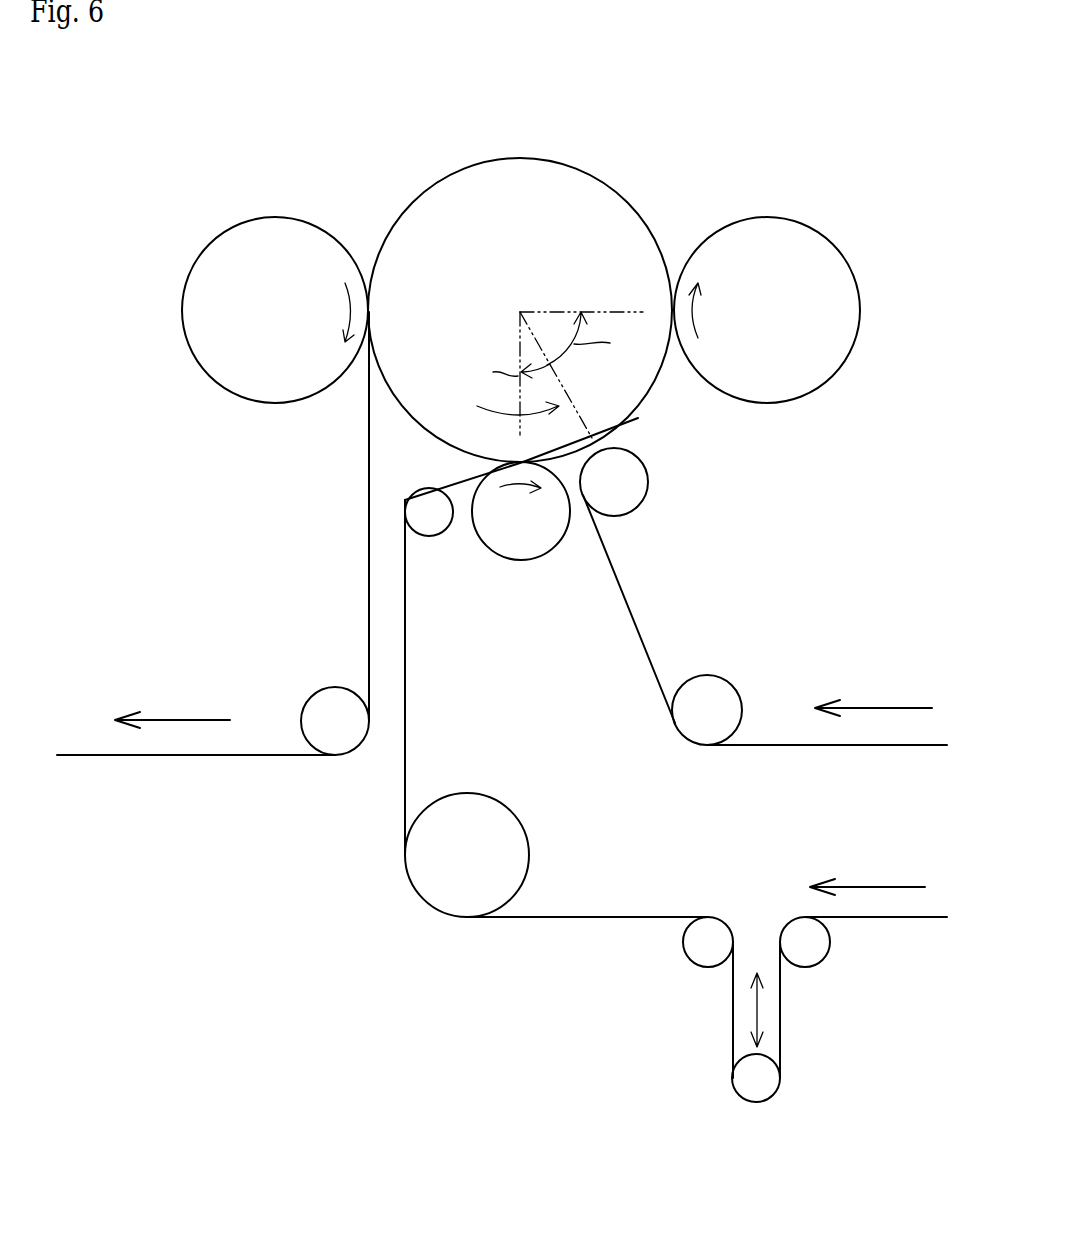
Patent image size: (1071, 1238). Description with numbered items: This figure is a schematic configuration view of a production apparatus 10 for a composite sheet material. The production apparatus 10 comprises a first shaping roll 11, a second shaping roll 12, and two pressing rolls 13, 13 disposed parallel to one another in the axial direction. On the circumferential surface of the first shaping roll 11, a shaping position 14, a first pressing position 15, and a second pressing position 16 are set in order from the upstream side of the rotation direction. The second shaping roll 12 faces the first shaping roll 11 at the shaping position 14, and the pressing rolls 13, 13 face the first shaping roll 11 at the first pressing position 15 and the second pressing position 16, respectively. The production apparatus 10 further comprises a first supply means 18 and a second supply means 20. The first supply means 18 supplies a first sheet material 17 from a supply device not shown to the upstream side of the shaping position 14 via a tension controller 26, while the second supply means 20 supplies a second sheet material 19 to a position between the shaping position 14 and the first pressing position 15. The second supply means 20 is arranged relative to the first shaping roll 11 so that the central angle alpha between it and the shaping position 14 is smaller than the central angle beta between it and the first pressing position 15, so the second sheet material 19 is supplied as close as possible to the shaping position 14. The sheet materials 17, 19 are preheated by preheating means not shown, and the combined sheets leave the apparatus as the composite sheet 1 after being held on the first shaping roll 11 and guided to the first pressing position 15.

The web 1 is at (252, 755).
The production apparatus 10 is at (863, 136).
The first shaping roll 11 is at (532, 185).
The second shaping roll 12 is at (530, 553).
The pressing roll 13 is at (217, 363).
The shaping position 14 is at (509, 456).
The first pressing position 15 is at (659, 313).
The second pressing position 16 is at (385, 315).
The first sheet material 17 is at (595, 917).
The first supply means 18 is at (430, 528).
The second sheet material 19 is at (795, 744).
The second supply means 20 is at (633, 500).
The tension controller 26 is at (741, 1082).